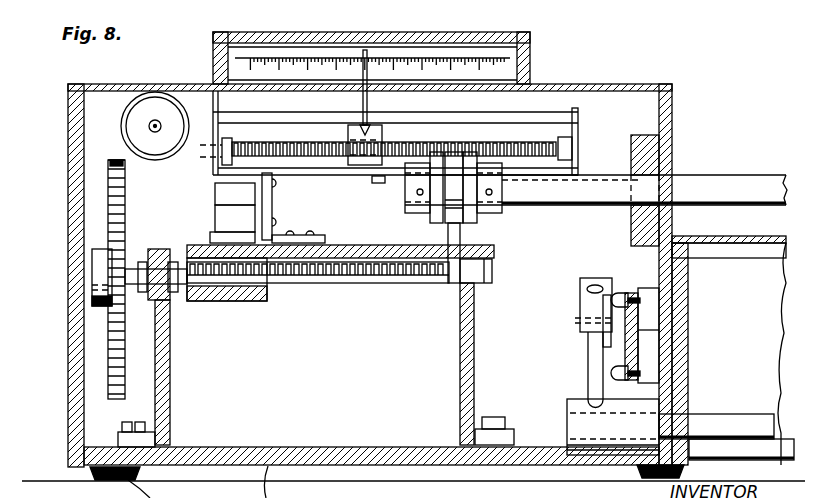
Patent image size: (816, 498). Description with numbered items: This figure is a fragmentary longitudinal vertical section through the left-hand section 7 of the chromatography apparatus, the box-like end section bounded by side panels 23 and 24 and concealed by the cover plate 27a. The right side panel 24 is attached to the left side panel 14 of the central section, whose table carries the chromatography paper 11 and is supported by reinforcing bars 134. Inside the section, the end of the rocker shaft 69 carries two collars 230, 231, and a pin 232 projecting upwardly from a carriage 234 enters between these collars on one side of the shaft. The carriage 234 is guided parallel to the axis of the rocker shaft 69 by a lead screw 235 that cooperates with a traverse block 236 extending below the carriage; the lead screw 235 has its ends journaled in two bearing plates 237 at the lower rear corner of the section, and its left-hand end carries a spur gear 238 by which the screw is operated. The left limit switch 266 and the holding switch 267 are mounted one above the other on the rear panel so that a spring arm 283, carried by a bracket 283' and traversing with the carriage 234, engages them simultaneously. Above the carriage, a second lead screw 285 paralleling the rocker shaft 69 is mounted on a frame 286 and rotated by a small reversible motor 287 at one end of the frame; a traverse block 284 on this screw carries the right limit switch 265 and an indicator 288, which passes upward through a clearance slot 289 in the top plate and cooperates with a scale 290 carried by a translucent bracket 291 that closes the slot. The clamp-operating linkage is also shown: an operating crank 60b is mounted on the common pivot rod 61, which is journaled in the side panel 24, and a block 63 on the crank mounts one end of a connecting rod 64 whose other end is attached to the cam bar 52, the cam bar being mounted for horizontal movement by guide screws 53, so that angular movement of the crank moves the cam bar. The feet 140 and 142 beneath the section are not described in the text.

The left-hand section 7 is at (680, 112).
The chromatography paper 11 is at (741, 238).
The left side panel 14 is at (684, 357).
The side panel 23 is at (75, 192).
The right side panel 24 is at (672, 88).
The cover plate 27a is at (641, 83).
The cam bar 52 is at (688, 327).
The guide screws 53 is at (622, 296).
The operating crank 60b is at (598, 362).
The pivot rod 61 is at (721, 422).
The block 63 is at (580, 297).
The connecting rod 64 is at (586, 330).
The rocker shaft 69 is at (757, 175).
The reinforcing bars 134 is at (724, 259).
The foot 140 is at (288, 482).
The foot 142 is at (152, 489).
The collar 230 is at (407, 216).
The collar 231 is at (504, 216).
The pin 232 is at (469, 238).
The carriage 234 is at (378, 258).
The lead screw 235 is at (320, 283).
The traverse block 236 is at (228, 301).
The bearing plates 237 is at (170, 365).
The spur gear 238 is at (115, 322).
The right limit switch 265 is at (385, 178).
The left limit switch 266 is at (218, 192).
The holding switch 267 is at (225, 215).
The spring arm 283 is at (290, 206).
The bracket 283' is at (298, 226).
The traverse block 284 is at (372, 140).
The lead screw 285 is at (277, 153).
The frame 286 is at (578, 116).
The reversible motor 287 is at (133, 117).
The indicator 288 is at (366, 50).
The clearance slot 289 is at (509, 83).
The scale 290 is at (445, 60).
The bracket 291 is at (532, 36).